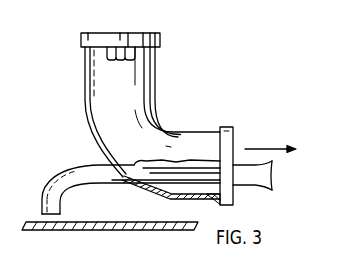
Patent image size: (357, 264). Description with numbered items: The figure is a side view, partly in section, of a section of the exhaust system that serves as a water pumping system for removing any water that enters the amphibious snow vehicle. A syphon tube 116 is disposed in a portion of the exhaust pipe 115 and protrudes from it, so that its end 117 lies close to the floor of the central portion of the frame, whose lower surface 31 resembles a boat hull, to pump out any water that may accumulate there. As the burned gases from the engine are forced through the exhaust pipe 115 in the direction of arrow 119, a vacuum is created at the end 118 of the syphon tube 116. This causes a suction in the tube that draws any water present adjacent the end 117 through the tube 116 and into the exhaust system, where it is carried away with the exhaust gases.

The exhaust pipe 115 is at (92, 97).
The syphon tube 116 is at (92, 169).
The end of syphon tube 117 is at (60, 210).
The end of syphon tube 118 is at (250, 180).
The arrow 119 is at (247, 149).
The surface 31 is at (125, 221).